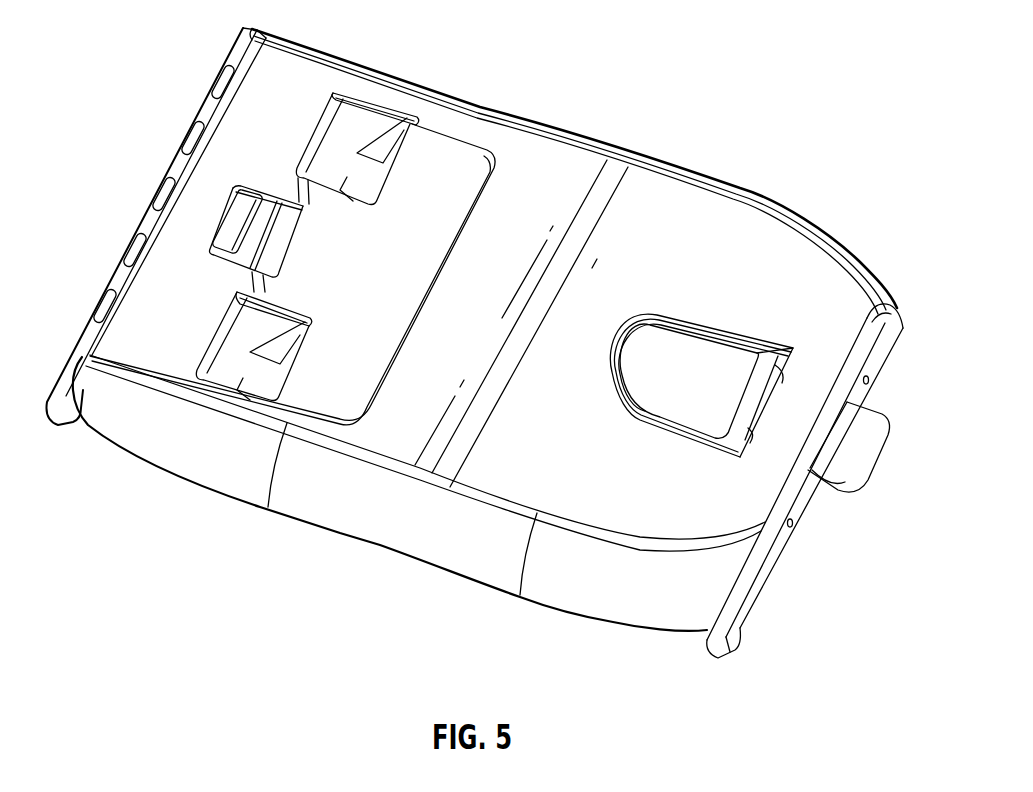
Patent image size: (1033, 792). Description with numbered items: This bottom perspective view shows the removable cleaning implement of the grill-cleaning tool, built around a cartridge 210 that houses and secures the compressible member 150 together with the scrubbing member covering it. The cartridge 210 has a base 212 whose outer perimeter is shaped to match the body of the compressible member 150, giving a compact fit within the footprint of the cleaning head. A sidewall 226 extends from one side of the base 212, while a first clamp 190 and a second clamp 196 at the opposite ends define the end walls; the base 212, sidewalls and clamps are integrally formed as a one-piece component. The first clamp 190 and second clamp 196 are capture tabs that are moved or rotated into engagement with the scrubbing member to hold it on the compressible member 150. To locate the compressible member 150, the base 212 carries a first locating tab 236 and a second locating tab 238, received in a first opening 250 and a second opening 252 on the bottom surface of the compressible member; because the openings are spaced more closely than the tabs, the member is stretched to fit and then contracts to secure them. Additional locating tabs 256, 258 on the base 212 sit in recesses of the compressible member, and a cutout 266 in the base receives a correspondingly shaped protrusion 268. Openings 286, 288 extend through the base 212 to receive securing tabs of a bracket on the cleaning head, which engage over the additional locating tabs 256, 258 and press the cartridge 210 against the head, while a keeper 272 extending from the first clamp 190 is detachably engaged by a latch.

The compressible member 150 is at (670, 400).
The first clamp 190 is at (763, 600).
The second clamp 196 is at (77, 333).
The cartridge 210 is at (556, 157).
The base 212 is at (683, 202).
The sidewall 226 is at (415, 528).
The first locating tab 236 is at (760, 403).
The second locating tab 238 is at (228, 213).
The first opening 250 is at (778, 348).
The second opening 252 is at (245, 183).
The additional locating tab 256 is at (345, 113).
The additional locating tab 258 is at (215, 358).
The cutout 266 is at (705, 315).
The protrusion 268 is at (658, 353).
The keeper 272 is at (860, 448).
The opening 286 is at (400, 160).
The opening 288 is at (280, 312).